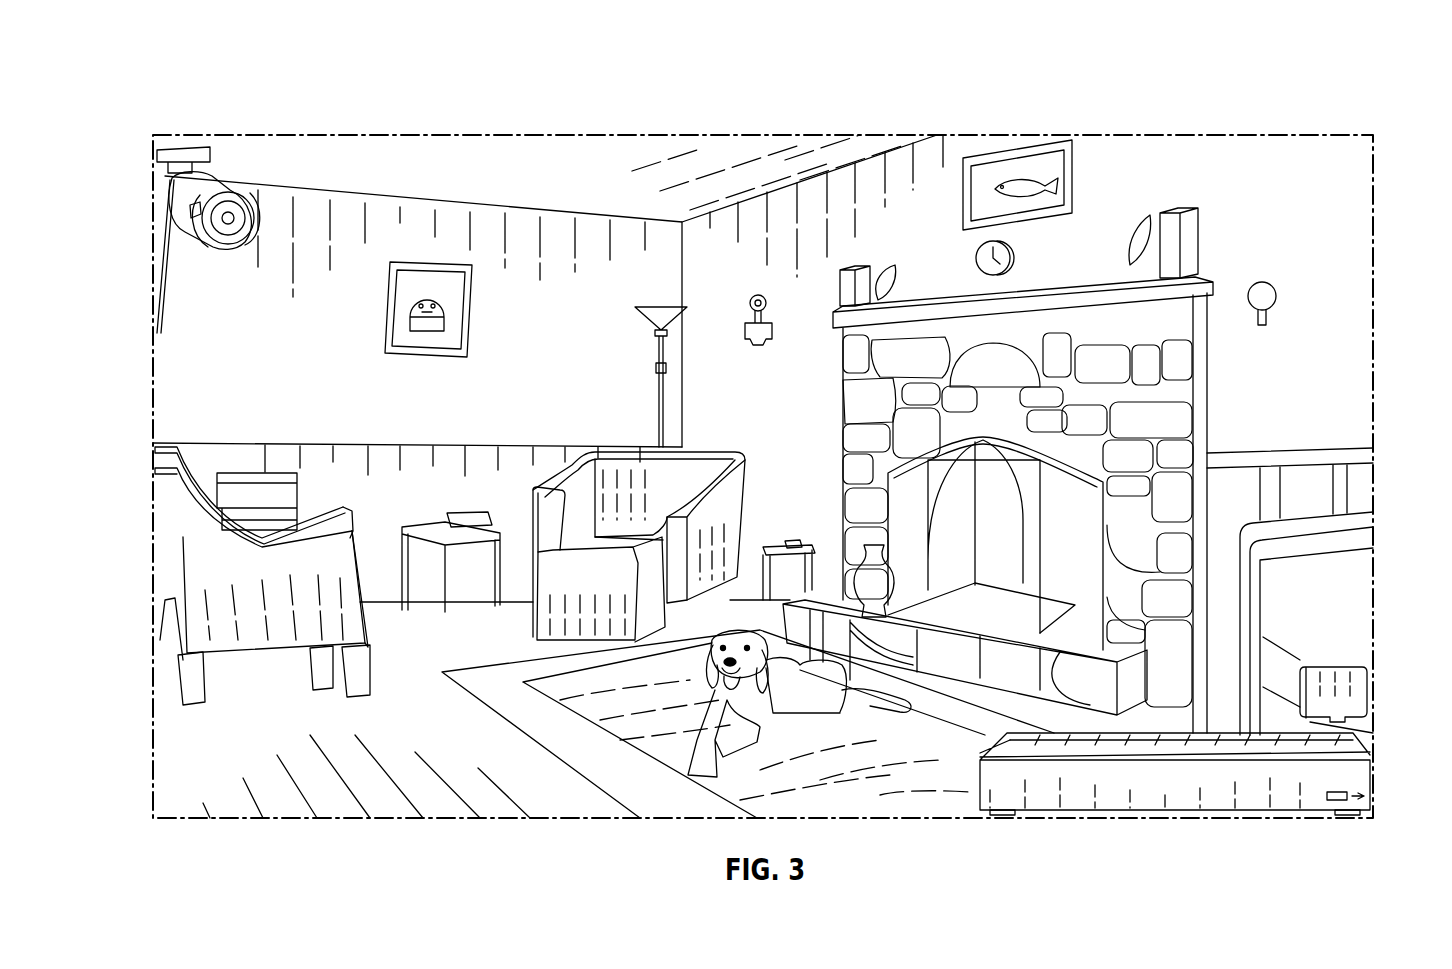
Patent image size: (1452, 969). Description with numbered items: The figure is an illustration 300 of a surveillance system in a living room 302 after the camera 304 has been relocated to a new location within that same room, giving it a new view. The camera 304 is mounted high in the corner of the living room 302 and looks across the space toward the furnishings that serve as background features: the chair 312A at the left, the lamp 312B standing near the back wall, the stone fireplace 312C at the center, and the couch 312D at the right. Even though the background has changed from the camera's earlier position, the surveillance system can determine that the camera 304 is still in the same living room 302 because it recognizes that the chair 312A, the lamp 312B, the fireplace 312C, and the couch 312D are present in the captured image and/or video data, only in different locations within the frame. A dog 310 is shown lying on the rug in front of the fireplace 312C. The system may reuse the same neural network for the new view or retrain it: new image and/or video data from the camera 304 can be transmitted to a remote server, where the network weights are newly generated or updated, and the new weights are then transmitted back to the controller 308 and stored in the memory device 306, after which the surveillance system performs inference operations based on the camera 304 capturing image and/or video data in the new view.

The illustration 300 is at (195, 78).
The living room 302 is at (373, 152).
The camera 304 is at (213, 183).
The memory device 306 is at (1353, 705).
The controller 308 is at (1355, 780).
The dog 310 is at (697, 770).
The chair 312A is at (183, 577).
The lamp 312B is at (663, 318).
The fireplace 312C is at (1045, 347).
The couch 312D is at (1350, 538).